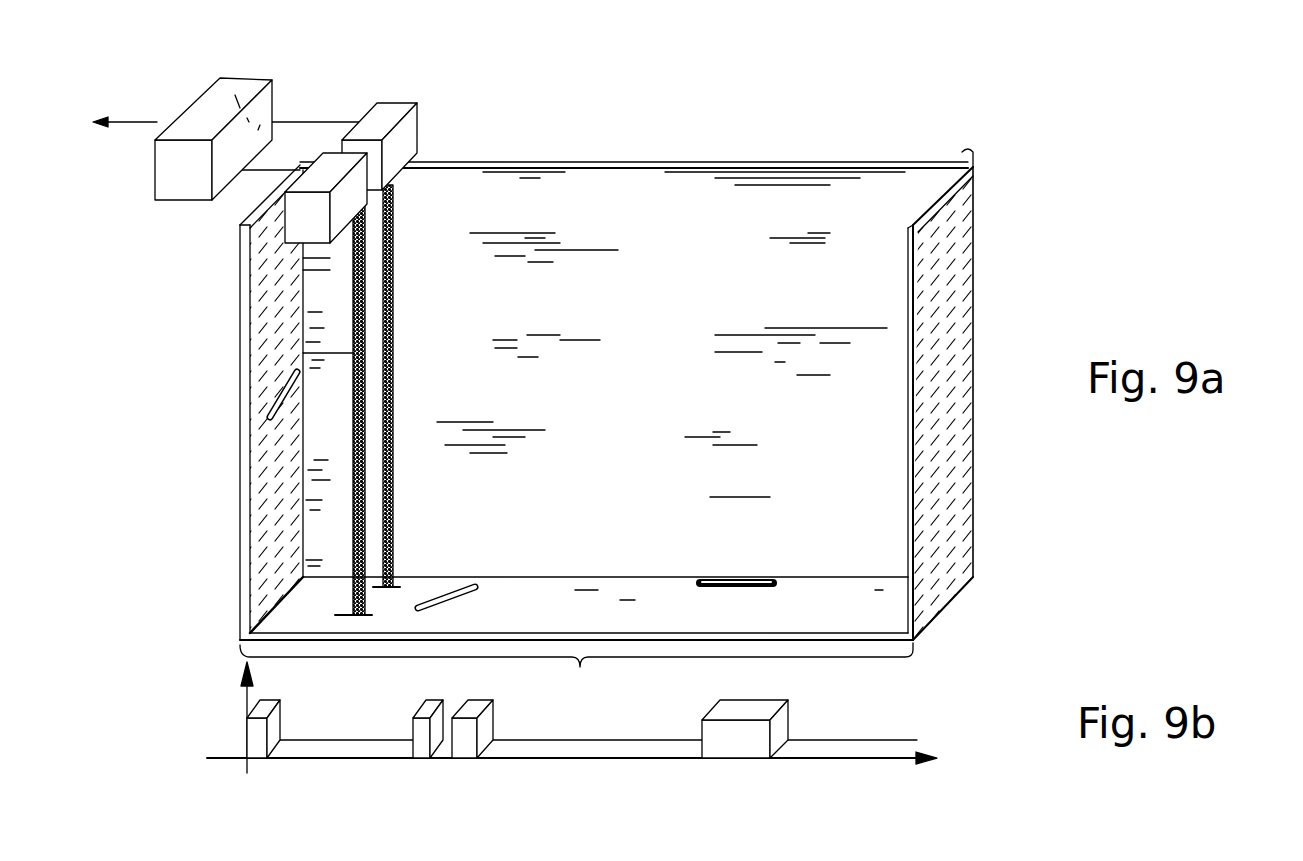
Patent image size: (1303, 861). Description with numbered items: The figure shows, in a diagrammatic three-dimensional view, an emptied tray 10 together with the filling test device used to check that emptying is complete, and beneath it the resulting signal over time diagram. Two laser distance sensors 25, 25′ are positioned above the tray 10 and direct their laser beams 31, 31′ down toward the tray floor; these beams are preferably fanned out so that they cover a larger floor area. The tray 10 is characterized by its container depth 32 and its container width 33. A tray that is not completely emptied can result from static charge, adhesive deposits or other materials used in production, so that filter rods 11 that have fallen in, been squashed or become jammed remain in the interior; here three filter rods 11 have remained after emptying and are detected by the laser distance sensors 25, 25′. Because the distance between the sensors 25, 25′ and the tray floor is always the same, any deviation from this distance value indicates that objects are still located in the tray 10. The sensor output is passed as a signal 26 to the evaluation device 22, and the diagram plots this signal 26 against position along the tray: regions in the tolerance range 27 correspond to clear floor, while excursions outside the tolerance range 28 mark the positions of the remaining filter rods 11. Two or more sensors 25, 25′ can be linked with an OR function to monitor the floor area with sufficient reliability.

In FIG. 9A, the tray 10 is at (947, 287).
In FIG. 9A, the filter rod 11 is at (292, 378).
In FIG. 9A, the evaluation device 22 is at (270, 90).
In FIG. 9A, the laser distance sensor 25 is at (413, 128).
In FIG. 9A, the laser distance sensor 25′ is at (287, 248).
In FIG. 9A, the signal 26 is at (138, 122).
In FIG. 9B, the in the tolerance range 27 is at (213, 755).
In FIG. 9B, the outside the tolerance range 28 is at (228, 718).
In FIG. 9A, the laser beam 31 is at (393, 215).
In FIG. 9A, the laser beam 31′ is at (365, 280).
In FIG. 9A, the container depth 32 is at (932, 170).
In FIG. 9A, the container width 33 is at (576, 678).